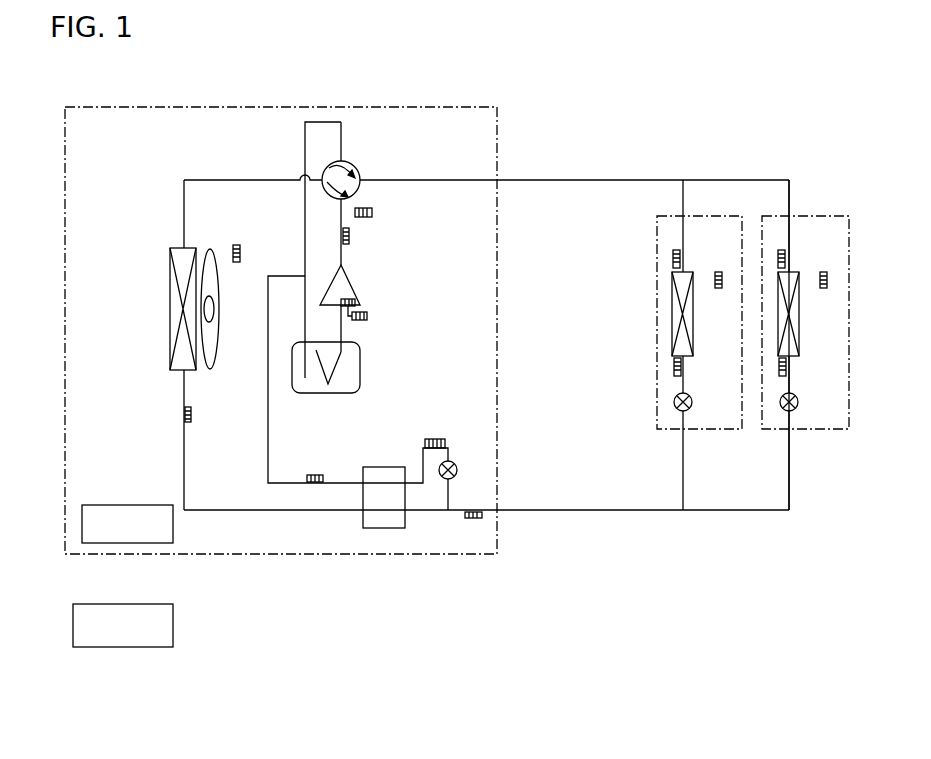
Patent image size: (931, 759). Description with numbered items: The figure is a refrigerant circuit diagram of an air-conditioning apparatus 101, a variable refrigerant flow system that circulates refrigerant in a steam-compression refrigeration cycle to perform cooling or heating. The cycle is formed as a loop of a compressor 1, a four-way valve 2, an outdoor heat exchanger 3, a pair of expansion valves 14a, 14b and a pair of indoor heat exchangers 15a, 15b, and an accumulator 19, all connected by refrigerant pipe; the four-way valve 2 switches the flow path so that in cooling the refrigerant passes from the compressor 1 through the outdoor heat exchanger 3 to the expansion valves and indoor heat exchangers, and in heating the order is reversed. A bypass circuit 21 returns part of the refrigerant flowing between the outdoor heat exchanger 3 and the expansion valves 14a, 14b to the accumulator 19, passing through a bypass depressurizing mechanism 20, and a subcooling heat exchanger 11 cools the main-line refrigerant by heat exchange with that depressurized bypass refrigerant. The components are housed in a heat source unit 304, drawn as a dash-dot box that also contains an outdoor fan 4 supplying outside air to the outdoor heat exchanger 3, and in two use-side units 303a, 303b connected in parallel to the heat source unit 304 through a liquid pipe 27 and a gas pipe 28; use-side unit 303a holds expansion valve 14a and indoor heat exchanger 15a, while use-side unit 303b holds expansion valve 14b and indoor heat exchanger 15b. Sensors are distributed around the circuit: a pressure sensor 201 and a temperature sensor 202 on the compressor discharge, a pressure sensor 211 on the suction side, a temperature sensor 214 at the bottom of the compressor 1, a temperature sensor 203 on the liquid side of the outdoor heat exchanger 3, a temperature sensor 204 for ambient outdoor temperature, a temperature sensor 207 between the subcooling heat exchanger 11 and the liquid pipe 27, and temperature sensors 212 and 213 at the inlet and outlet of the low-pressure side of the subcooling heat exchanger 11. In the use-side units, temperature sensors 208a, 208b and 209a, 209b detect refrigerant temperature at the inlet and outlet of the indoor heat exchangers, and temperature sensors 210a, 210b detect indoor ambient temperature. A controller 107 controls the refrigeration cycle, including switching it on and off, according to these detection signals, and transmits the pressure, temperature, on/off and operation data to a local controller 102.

The compressor 1 is at (334, 272).
The four-way valve 2 is at (356, 166).
The outdoor heat exchanger 3 is at (170, 250).
The outdoor fan 4 is at (219, 350).
The subcooling heat exchanger 11 is at (380, 467).
The expansion valve 14a is at (691, 406).
The expansion valve 14b is at (797, 406).
The indoor heat exchanger 15a is at (694, 345).
The indoor heat exchanger 15b is at (800, 345).
The accumulator 19 is at (360, 375).
The bypass depressurizing mechanism 20 is at (456, 462).
The bypass circuit 21 is at (270, 462).
The liquid pipe 27 is at (540, 510).
The gas pipe 28 is at (527, 180).
The air-conditioning apparatus 101 is at (652, 532).
The local controller 102 is at (107, 644).
The controller 107 is at (130, 505).
The pressure sensor 201 is at (372, 212).
The temperature sensor 202 is at (349, 236).
The temperature sensor 203 is at (191, 412).
The temperature sensor 204 is at (236, 262).
The temperature sensor 207 is at (465, 517).
The temperature sensor 208a is at (682, 370).
The temperature sensor 208b is at (787, 370).
The temperature sensor 209a is at (681, 258).
The temperature sensor 209b is at (786, 258).
The temperature sensor 210a is at (717, 289).
The temperature sensor 210b is at (822, 289).
The pressure sensor 211 is at (367, 316).
The temperature sensor 212 is at (433, 439).
The temperature sensor 213 is at (315, 475).
The temperature sensor 214 is at (340, 313).
The use-side unit 303a is at (707, 430).
The use-side unit 303b is at (812, 430).
The heat source unit 304 is at (271, 556).